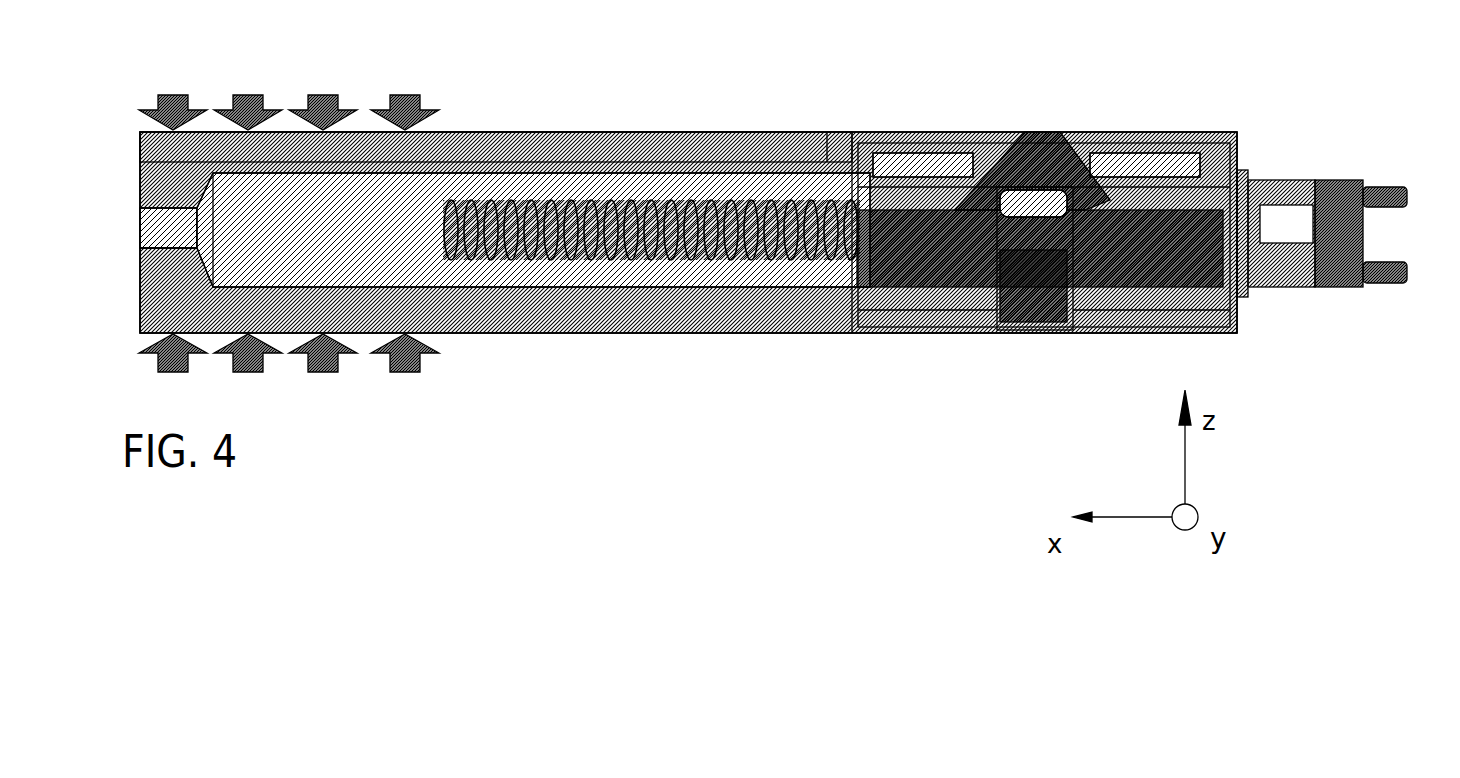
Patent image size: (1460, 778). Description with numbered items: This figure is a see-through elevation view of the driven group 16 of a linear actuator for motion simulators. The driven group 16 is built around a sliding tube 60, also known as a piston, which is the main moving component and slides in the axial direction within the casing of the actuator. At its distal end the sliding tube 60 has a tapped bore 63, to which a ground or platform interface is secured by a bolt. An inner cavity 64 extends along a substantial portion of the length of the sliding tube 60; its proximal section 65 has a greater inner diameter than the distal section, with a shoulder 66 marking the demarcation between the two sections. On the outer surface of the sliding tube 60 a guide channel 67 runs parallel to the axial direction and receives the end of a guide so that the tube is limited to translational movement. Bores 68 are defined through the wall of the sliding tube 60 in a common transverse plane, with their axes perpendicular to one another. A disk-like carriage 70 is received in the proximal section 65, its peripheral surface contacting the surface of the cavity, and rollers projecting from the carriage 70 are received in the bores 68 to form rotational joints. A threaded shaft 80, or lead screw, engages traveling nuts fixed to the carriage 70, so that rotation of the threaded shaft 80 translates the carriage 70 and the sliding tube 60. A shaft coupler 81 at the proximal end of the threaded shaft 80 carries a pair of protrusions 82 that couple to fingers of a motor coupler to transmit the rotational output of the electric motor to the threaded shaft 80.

The driven group 16 is at (705, 370).
The sliding tube 60 is at (140, 185).
The tapped bore 63 is at (140, 247).
The inner cavity 64 is at (430, 276).
The proximal section 65 is at (947, 300).
The shoulder 66 is at (863, 297).
The guide channel 67 is at (515, 133).
The bores 68 is at (1022, 132).
The carriage 70 is at (1073, 327).
The threaded shaft 80 is at (585, 262).
The shaft coupler 81 is at (1293, 180).
The protrusions 82 is at (1387, 180).